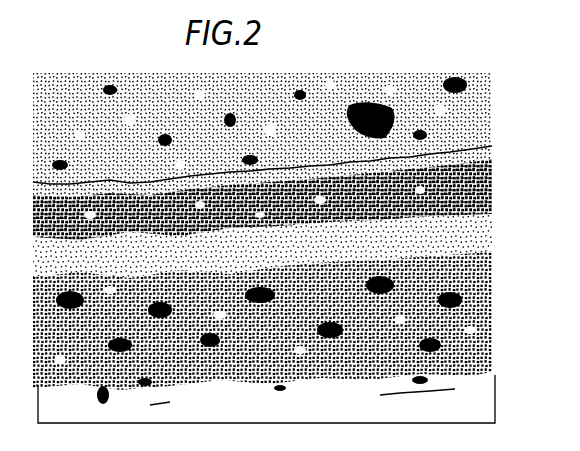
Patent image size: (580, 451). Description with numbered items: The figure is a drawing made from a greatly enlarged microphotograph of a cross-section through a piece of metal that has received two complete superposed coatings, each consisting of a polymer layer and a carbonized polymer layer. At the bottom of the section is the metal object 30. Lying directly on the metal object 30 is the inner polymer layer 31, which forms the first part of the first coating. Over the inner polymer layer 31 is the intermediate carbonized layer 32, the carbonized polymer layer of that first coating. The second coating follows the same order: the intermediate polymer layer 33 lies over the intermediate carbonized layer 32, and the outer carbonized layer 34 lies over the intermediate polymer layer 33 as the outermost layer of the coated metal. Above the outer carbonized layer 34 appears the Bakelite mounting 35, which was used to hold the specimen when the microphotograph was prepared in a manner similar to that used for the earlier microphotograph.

The metal object 30 is at (496, 400).
The inner polymer layer 31 is at (492, 305).
The intermediate carbonized layer 32 is at (492, 247).
The intermediate polymer layer 33 is at (478, 200).
The outer carbonized layer 34 is at (490, 157).
The Bakelite mounting 35 is at (490, 110).